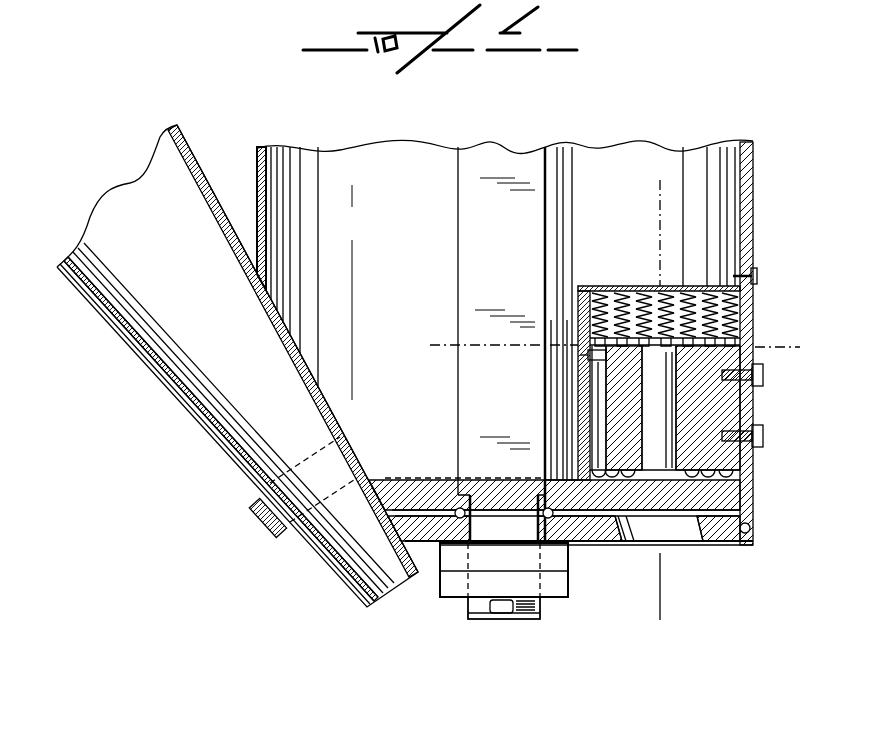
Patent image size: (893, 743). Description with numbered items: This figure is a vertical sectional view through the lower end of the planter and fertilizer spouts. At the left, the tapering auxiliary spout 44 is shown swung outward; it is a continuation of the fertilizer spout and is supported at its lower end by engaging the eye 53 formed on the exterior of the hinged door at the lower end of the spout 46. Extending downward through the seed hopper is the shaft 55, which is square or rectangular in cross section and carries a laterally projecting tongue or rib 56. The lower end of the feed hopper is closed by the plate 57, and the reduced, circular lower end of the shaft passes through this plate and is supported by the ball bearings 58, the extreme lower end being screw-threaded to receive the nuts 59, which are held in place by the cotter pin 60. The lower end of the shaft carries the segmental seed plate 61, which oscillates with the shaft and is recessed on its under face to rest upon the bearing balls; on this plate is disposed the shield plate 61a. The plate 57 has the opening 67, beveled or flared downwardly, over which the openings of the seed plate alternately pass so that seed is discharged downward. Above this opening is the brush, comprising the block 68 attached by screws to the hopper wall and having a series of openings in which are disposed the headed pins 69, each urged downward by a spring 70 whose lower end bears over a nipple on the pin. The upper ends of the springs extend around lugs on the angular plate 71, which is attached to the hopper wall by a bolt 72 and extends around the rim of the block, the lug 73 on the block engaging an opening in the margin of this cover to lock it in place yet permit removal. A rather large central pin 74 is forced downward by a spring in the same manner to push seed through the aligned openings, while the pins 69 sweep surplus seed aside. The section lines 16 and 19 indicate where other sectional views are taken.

The section line 16- 16 is at (642, 180).
The section line 19- 19 is at (430, 330).
The auxiliary spout 44 is at (166, 391).
The spout 46 is at (757, 176).
The eye 53 is at (267, 524).
The shaft 55 is at (487, 147).
The tongue or rib 56 is at (560, 157).
The plate 57 is at (594, 536).
The ball bearings 58 is at (447, 499).
The nuts 59 is at (452, 584).
The cotter pin 60 is at (503, 614).
The seed plate 61 is at (723, 503).
The shield plate 61a is at (397, 478).
The opening 67 is at (628, 534).
The block 68 is at (725, 395).
The pins 69 is at (597, 458).
The spring 70 is at (727, 313).
The plate 71 is at (616, 286).
The bolt 72 is at (760, 274).
The lug 73 is at (588, 356).
The pin 74 is at (663, 423).